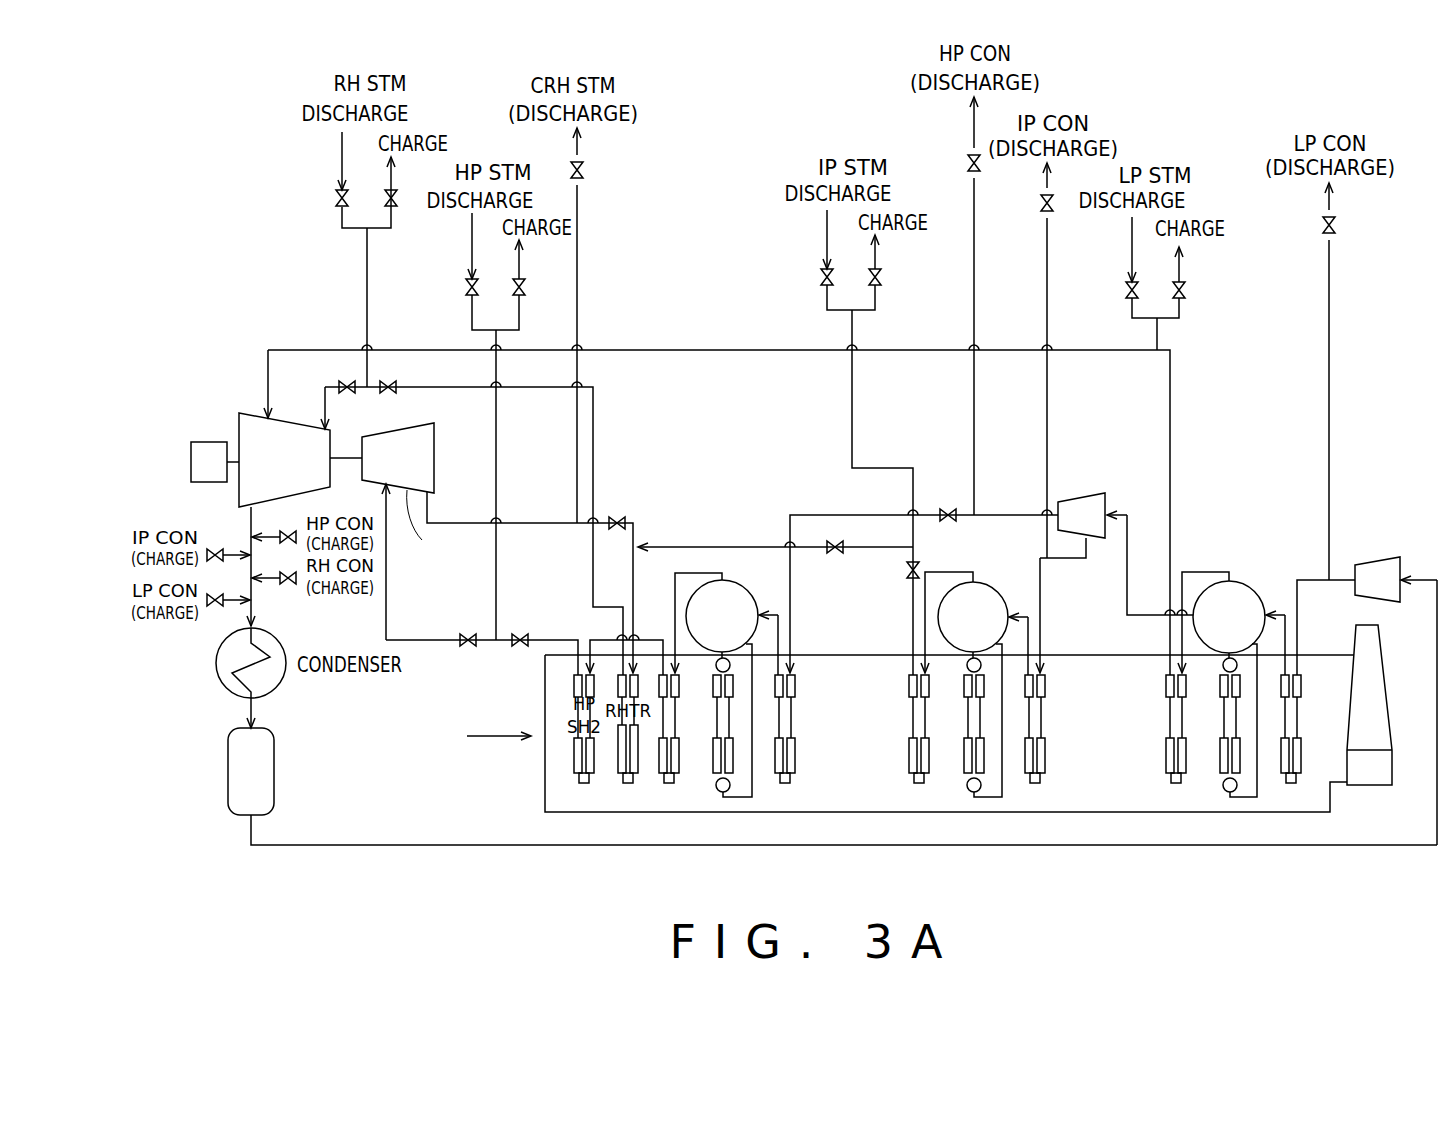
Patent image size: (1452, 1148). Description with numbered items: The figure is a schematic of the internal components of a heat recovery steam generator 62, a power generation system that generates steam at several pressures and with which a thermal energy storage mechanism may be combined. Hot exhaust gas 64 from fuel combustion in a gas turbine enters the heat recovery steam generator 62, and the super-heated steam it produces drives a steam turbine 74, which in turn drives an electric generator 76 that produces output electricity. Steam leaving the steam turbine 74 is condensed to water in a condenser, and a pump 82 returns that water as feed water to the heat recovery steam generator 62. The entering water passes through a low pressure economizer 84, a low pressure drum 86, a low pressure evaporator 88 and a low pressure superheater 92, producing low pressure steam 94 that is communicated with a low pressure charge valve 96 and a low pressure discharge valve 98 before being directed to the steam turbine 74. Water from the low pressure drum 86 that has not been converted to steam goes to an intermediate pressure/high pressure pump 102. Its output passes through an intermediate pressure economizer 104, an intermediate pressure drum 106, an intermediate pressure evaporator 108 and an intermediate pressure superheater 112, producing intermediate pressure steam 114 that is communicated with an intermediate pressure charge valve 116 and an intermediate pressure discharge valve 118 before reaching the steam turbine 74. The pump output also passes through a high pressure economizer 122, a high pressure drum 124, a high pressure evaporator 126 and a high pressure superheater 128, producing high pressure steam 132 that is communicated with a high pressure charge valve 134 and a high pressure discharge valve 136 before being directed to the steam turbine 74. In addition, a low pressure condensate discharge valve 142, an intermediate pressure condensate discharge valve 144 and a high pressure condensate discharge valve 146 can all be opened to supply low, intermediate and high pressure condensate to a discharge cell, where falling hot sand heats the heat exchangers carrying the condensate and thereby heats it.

The heat recovery steam generator 62 is at (962, 813).
The hot exhaust gas 64 is at (488, 738).
The steam turbine 74 is at (348, 435).
The electric generator 76 is at (190, 463).
The pump 82 is at (1402, 565).
The low pressure economizer 84 is at (1300, 752).
The low pressure drum 86 is at (1248, 583).
The low pressure evaporator 88 is at (1238, 758).
The low pressure superheater 92 is at (1165, 757).
The low pressure steam 94 is at (752, 348).
The low pressure charge valve 96 is at (1187, 280).
The low pressure discharge valve 98 is at (1123, 293).
The intermediate pressure/high pressure pump 102 is at (1107, 502).
The intermediate pressure economizer 104 is at (1045, 752).
The intermediate pressure drum 106 is at (1003, 592).
The intermediate pressure evaporator 108 is at (985, 758).
The intermediate pressure superheater 112 is at (910, 758).
The intermediate pressure steam 114 is at (460, 523).
The intermediate pressure charge valve 116 is at (880, 273).
The intermediate pressure discharge valve 118 is at (823, 283).
The high pressure economizer 122 is at (800, 760).
The high pressure drum 124 is at (747, 592).
The high pressure evaporator 126 is at (716, 762).
The high pressure superheater 128 is at (662, 757).
The high pressure steam 132 is at (496, 460).
The high pressure charge valve 134 is at (523, 290).
The high pressure discharge valve 136 is at (467, 293).
The low pressure condensate discharge valve 142 is at (1335, 217).
The intermediate pressure condensate discharge valve 144 is at (1042, 203).
The high pressure condensate discharge valve 146 is at (967, 162).